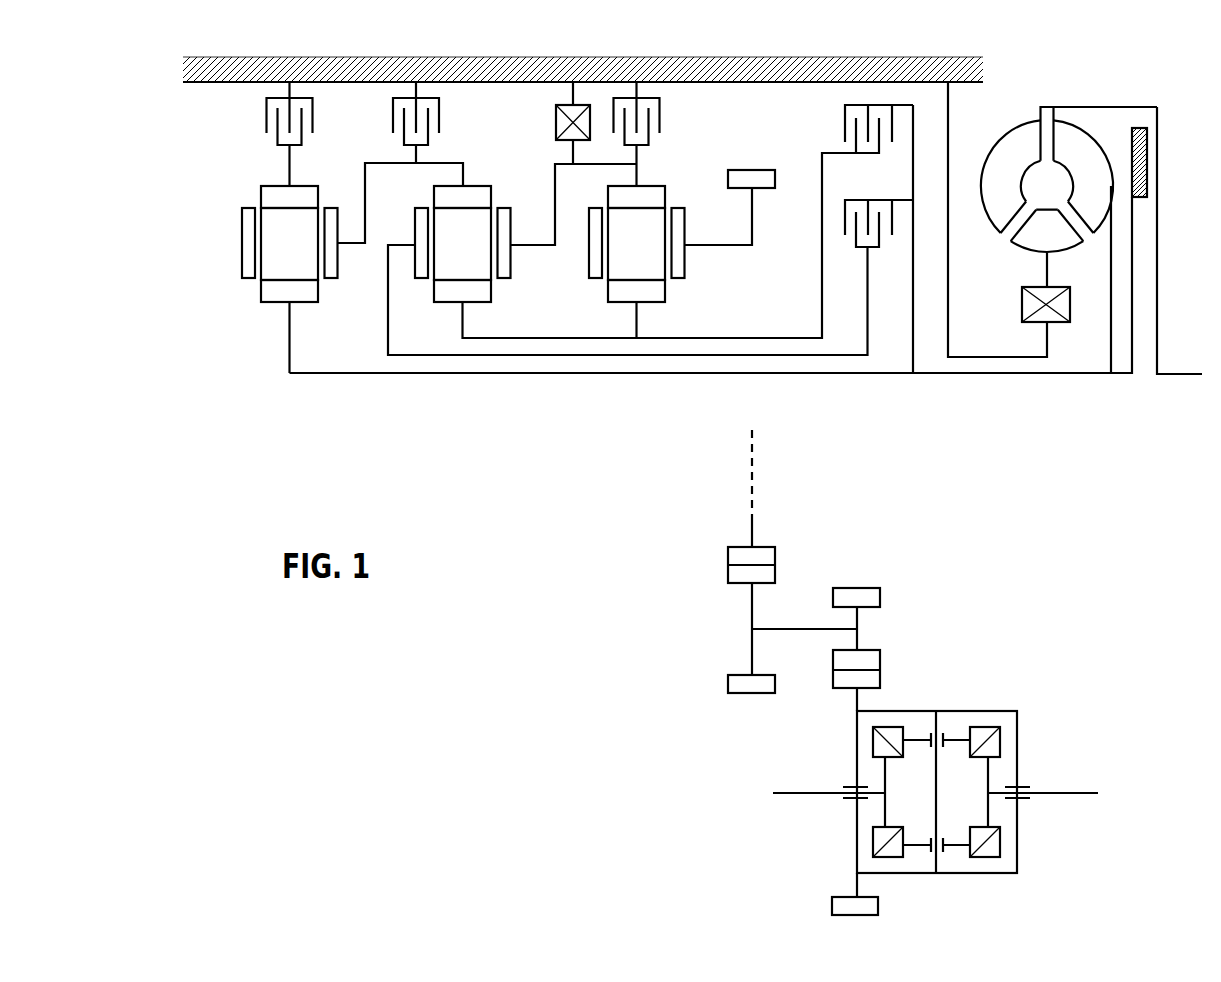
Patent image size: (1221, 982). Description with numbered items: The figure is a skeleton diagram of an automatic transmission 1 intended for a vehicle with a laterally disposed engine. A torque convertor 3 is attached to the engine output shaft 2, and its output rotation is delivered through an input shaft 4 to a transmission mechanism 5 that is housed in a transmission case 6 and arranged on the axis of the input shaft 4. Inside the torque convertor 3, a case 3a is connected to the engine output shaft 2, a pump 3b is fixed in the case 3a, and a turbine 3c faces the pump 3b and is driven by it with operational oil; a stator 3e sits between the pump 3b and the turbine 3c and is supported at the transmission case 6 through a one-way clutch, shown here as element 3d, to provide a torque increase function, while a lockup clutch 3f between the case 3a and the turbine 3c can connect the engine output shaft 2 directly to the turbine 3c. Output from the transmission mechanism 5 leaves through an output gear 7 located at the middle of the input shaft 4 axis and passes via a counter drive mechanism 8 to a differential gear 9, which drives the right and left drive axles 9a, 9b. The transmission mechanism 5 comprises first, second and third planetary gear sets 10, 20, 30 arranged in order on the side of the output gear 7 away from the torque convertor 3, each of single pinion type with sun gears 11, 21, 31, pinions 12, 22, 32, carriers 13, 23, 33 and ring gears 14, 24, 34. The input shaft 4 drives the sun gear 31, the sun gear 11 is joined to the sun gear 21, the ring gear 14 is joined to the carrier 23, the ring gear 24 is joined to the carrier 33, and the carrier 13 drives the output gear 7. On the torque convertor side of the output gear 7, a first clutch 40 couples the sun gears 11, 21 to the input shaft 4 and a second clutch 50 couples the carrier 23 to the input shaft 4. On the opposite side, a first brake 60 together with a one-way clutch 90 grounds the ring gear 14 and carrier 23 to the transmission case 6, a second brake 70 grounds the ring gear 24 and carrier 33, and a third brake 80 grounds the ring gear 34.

The automatic transmission 1 is at (1152, 80).
The engine output shaft 2 is at (1170, 372).
The torque convertor 3 is at (1073, 195).
The case 3a is at (1073, 105).
The pump 3b is at (997, 147).
The turbine 3c is at (1087, 138).
The one-way clutch 3d is at (1070, 310).
The stator 3e is at (1065, 255).
The lockup clutch 3f is at (1148, 162).
The input shaft 4 is at (937, 377).
The transmission mechanism 5 is at (863, 385).
The transmission case 6 is at (896, 57).
The output gear 7 is at (760, 168).
The counter drive mechanism 8 is at (859, 577).
The differential gear 9 is at (938, 778).
The drive axle 9a is at (793, 794).
The drive axle 9b is at (1075, 795).
The first planetary gear set 10 is at (633, 235).
The sun gear 11 is at (623, 303).
The pinion 12 is at (623, 265).
The carrier 13 is at (588, 255).
The ring gear 14 is at (607, 200).
The second planetary gear set 20 is at (626, 242).
The sun gear 21 is at (448, 298).
The pinion 22 is at (443, 263).
The carrier 23 is at (415, 262).
The ring gear 24 is at (432, 197).
The third planetary gear set 30 is at (335, 252).
The sun gear 31 is at (282, 295).
The pinion 32 is at (273, 257).
The carrier 33 is at (243, 253).
The ring gear 34 is at (260, 195).
The first clutch 40 is at (868, 155).
The second clutch 50 is at (882, 238).
The first brake 60 is at (662, 115).
The second brake 70 is at (440, 115).
The third brake 80 is at (313, 112).
The one-way clutch 90 is at (557, 122).